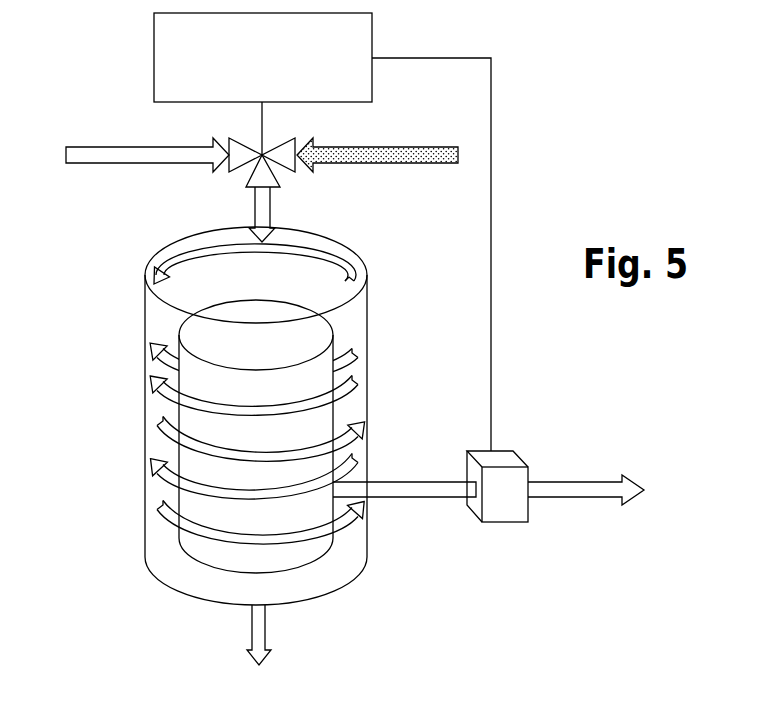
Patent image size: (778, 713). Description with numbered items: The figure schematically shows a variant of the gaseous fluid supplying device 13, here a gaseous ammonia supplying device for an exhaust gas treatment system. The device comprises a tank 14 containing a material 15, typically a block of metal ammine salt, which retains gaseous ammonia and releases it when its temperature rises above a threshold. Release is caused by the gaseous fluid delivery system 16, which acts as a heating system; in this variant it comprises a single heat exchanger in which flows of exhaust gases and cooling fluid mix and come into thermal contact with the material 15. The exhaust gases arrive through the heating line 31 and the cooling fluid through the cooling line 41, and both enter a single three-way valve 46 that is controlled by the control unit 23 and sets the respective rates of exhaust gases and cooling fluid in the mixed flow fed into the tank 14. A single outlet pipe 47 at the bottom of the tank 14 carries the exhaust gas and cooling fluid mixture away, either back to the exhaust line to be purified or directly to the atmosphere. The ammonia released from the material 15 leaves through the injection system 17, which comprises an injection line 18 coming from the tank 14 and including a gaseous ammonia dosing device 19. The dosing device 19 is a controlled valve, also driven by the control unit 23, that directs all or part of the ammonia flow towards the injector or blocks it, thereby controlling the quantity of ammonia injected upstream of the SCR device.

The gaseous fluid supplying device 13 is at (221, 416).
The tank 14 is at (145, 553).
The material 15 is at (315, 380).
The gaseous fluid delivery system 16 is at (146, 331).
The injection system 17 is at (520, 438).
The injection line 18 is at (573, 490).
The gaseous ammonia dosing device 19 is at (502, 500).
The control unit 23 is at (251, 67).
The heating line 31 is at (125, 153).
The cooling line 41 is at (417, 157).
The three-way valve 46 is at (282, 151).
The outlet pipe 47 is at (262, 641).